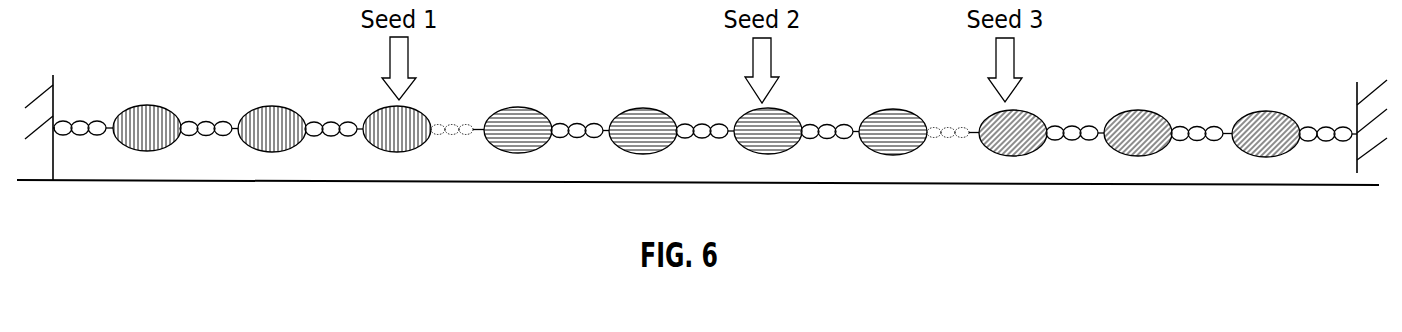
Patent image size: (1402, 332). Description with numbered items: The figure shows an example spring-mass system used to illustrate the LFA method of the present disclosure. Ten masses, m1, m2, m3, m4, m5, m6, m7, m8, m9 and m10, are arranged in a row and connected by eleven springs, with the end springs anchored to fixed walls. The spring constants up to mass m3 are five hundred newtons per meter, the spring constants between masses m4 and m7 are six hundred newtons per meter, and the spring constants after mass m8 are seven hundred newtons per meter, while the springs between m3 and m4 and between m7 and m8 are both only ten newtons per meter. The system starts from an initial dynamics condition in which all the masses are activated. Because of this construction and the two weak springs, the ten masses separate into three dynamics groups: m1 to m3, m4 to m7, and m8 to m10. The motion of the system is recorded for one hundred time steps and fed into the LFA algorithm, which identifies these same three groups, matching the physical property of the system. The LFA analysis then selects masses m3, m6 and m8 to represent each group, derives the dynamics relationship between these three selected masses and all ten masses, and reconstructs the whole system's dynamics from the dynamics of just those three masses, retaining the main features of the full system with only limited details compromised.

The mass m1 is at (147, 128).
The mass m2 is at (272, 129).
The mass m3 is at (397, 129).
The mass m4 is at (518, 130).
The mass m5 is at (643, 131).
The mass m6 is at (768, 131).
The mass m7 is at (893, 132).
The mass m8 is at (1013, 133).
The mass m9 is at (1138, 133).
The mass m10 is at (1266, 134).